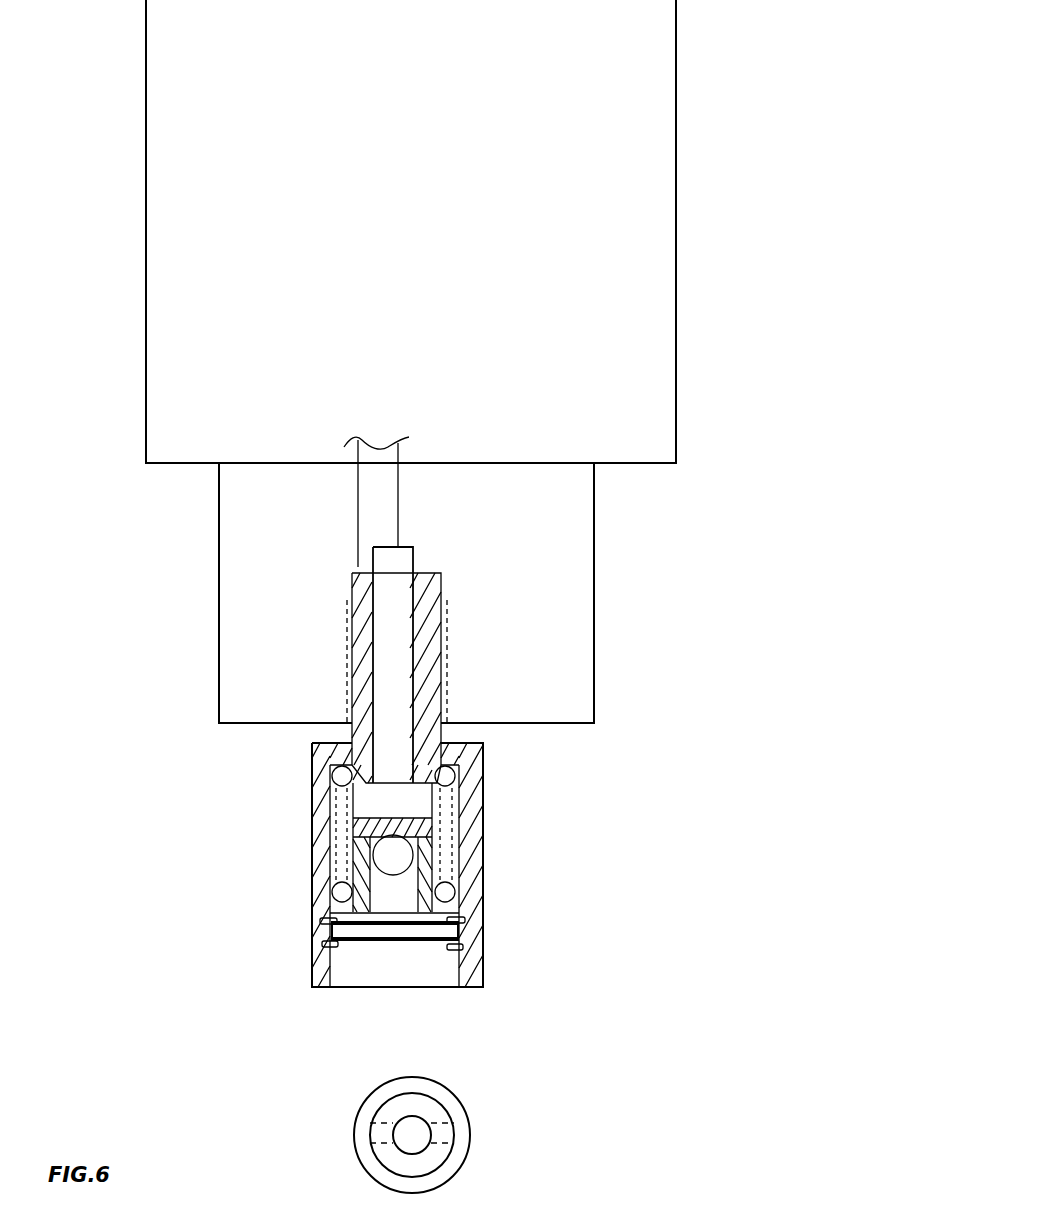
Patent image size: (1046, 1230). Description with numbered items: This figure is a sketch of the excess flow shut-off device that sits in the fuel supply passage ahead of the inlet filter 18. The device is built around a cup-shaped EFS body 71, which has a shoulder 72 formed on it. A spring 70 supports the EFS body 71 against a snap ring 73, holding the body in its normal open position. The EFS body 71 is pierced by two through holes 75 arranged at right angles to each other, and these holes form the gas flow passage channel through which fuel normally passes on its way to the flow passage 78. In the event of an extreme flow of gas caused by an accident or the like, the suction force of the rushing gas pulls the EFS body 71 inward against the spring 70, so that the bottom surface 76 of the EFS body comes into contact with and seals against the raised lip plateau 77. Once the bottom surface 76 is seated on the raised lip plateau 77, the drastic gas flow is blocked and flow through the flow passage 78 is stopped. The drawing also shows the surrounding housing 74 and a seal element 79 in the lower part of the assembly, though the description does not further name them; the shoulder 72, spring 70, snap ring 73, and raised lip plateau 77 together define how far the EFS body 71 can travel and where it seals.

The inlet filter 18 is at (326, 932).
The spring 70 is at (438, 776).
The EFS body 71 is at (421, 907).
The shoulder 72 is at (331, 902).
The snap ring 73 is at (473, 918).
The housing 74 is at (331, 765).
The through holes 75 is at (409, 855).
The bottom surface 76 is at (376, 810).
The raised lip plateau 77 is at (428, 765).
The flow passage 78 is at (371, 678).
The seal 79 is at (469, 948).